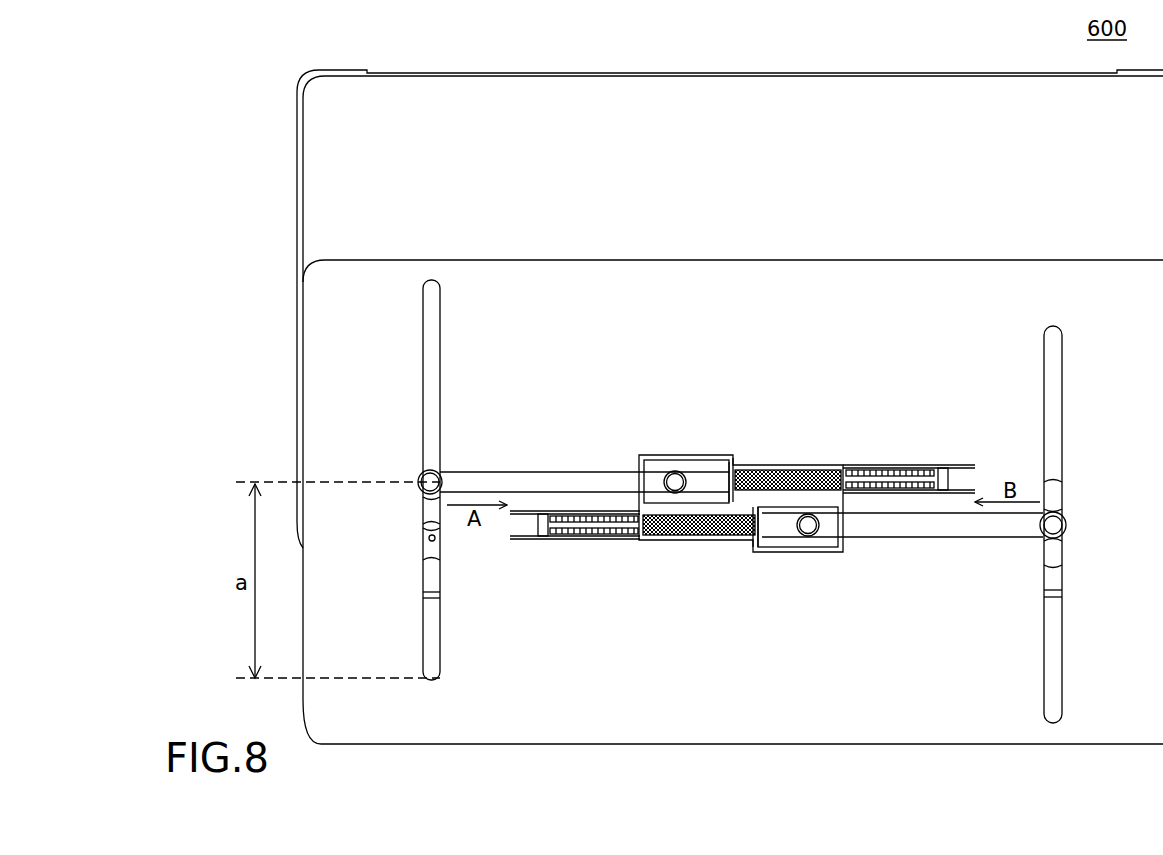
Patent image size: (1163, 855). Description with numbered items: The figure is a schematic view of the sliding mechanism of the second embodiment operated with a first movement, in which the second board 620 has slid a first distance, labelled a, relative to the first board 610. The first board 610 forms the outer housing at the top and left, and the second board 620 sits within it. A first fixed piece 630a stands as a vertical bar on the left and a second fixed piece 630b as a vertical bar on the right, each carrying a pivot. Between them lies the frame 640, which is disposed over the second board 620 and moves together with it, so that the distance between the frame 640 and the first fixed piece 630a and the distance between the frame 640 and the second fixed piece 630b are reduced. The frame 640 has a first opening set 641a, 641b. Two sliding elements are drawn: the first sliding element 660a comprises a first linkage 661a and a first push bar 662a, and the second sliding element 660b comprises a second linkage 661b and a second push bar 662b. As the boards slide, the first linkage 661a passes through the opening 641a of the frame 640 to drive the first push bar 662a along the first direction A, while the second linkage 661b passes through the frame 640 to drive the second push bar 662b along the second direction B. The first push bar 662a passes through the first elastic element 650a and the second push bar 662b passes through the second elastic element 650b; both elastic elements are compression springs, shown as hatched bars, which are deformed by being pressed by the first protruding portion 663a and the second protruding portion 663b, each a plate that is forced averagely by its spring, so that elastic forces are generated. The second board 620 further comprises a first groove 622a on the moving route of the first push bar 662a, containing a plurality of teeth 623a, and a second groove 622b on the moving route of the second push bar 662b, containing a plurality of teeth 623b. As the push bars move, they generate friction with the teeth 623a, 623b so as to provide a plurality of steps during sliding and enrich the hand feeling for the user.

The first board 610 is at (800, 87).
The second board 620 is at (834, 271).
The first fixed piece 630a is at (421, 470).
The second fixed piece 630b is at (1062, 500).
The frame 640 is at (840, 466).
The opening of the first opening set 641a is at (631, 472).
The opening of the first opening set 641b is at (850, 540).
The first elastic element 650a is at (747, 466).
The second elastic element 650b is at (655, 540).
The first sliding element 660a is at (572, 453).
The second sliding element 660b is at (920, 548).
The first linkage 661a is at (537, 482).
The second linkage 661b is at (968, 527).
The first push bar 662a is at (707, 468).
The second push bar 662b is at (770, 527).
The first protruding portion 663a is at (732, 458).
The second protruding portion 663b is at (747, 543).
The first groove 622a is at (920, 466).
The second groove 622b is at (587, 540).
The teeth 623a is at (902, 466).
The teeth 623b is at (550, 541).